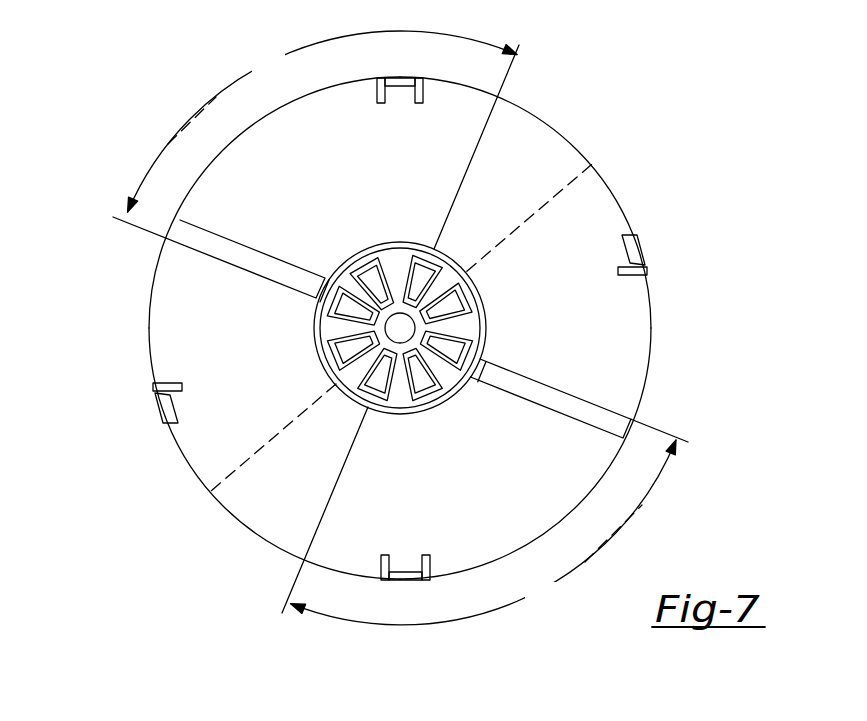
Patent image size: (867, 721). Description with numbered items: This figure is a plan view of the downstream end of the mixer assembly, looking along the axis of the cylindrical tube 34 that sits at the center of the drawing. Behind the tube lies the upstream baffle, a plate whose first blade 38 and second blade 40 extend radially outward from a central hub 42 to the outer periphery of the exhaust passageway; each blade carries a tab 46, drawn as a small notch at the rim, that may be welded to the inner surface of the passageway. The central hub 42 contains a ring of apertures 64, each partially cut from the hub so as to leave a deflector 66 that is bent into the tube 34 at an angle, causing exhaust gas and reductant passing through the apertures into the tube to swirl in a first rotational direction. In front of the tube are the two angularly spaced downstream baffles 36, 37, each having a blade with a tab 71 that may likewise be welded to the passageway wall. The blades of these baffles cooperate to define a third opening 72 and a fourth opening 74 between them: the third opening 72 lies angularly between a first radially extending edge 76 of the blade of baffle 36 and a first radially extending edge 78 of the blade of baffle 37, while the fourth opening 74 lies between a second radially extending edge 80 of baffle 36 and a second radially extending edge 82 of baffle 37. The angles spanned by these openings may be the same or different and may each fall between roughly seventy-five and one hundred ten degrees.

The cylindrical tube 34 is at (488, 343).
The downstream baffle 36 is at (557, 129).
The downstream baffle 37 is at (180, 452).
The first blade 38 is at (226, 148).
The second blade 40 is at (568, 506).
The central hub 42 is at (402, 383).
The tab 46 is at (403, 86).
The aperture 64 is at (453, 260).
The deflector 66 is at (384, 278).
The tab 71 is at (152, 389).
The third opening 72 is at (219, 174).
The fourth opening 74 is at (600, 487).
The first radially extending edge 76 is at (462, 273).
The first radially extending edge 78 is at (222, 262).
The second radially extending edge 80 is at (558, 405).
The second radially extending edge 82 is at (357, 469).